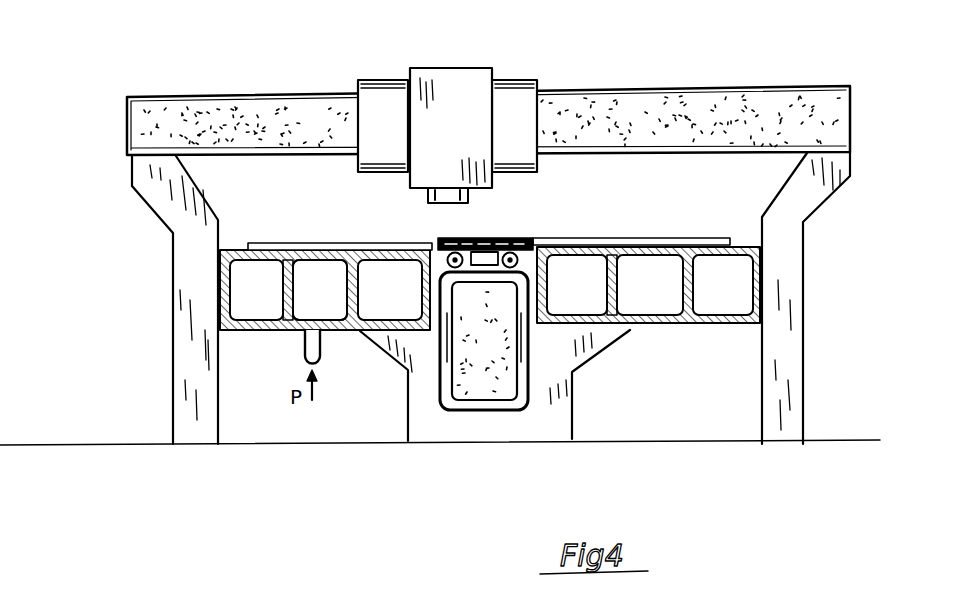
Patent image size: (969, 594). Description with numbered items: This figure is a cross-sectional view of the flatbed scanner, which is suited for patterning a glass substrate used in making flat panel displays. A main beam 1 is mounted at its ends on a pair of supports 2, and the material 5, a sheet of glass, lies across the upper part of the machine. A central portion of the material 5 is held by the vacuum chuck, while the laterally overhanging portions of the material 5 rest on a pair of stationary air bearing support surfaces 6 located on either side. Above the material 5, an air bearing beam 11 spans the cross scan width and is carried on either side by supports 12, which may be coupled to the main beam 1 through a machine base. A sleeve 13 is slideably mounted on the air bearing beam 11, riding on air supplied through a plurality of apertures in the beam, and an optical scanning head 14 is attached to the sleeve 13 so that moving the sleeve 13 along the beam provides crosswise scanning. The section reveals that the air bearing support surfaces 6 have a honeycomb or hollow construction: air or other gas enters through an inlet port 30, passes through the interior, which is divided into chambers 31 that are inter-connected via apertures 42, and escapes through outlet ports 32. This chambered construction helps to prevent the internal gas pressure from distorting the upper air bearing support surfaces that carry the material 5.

The main beam 1 is at (483, 388).
The support 2 is at (435, 425).
The material 5 is at (262, 243).
The stationary air bearing support surface 6 is at (267, 333).
The air bearing beam 11 is at (208, 106).
The support 12 is at (173, 331).
The sleeve 13 is at (386, 86).
The optical scanning head 14 is at (451, 70).
The inlet port 30 is at (321, 362).
The chamber 31 is at (302, 275).
The outlet port 32 is at (237, 278).
The aperture 42 is at (608, 278).